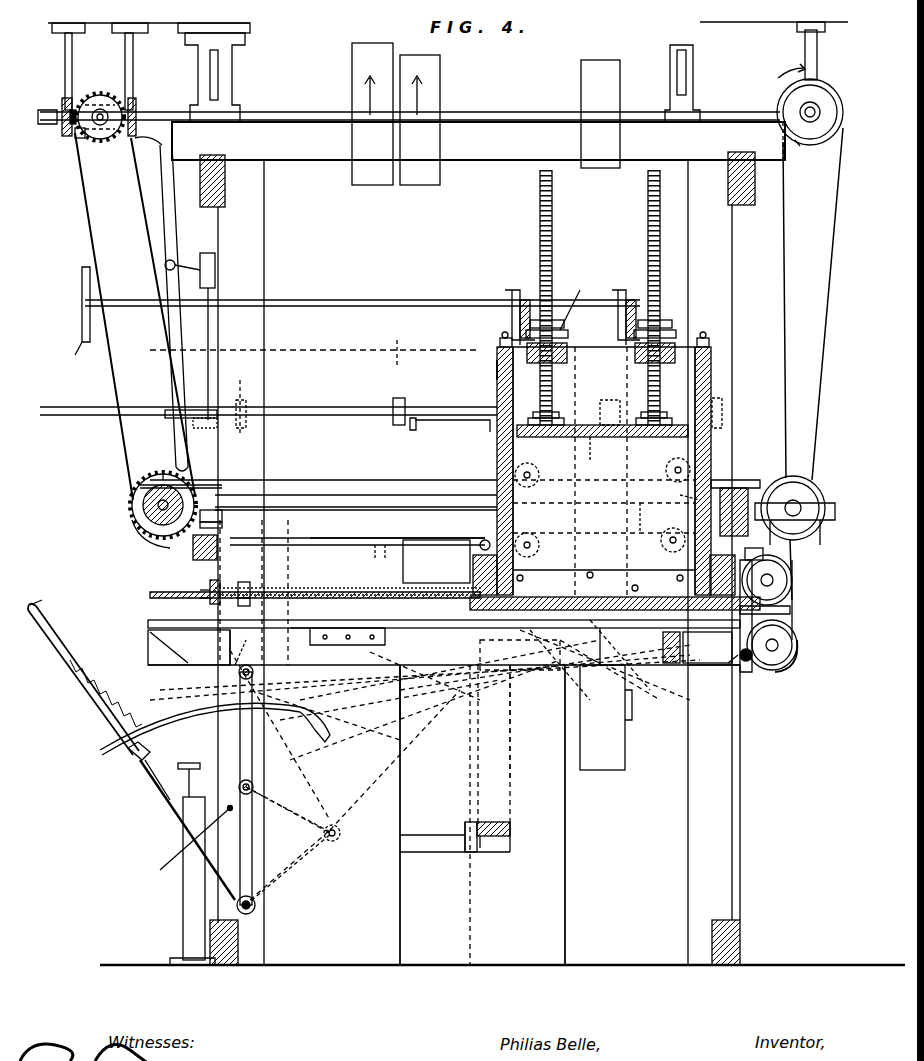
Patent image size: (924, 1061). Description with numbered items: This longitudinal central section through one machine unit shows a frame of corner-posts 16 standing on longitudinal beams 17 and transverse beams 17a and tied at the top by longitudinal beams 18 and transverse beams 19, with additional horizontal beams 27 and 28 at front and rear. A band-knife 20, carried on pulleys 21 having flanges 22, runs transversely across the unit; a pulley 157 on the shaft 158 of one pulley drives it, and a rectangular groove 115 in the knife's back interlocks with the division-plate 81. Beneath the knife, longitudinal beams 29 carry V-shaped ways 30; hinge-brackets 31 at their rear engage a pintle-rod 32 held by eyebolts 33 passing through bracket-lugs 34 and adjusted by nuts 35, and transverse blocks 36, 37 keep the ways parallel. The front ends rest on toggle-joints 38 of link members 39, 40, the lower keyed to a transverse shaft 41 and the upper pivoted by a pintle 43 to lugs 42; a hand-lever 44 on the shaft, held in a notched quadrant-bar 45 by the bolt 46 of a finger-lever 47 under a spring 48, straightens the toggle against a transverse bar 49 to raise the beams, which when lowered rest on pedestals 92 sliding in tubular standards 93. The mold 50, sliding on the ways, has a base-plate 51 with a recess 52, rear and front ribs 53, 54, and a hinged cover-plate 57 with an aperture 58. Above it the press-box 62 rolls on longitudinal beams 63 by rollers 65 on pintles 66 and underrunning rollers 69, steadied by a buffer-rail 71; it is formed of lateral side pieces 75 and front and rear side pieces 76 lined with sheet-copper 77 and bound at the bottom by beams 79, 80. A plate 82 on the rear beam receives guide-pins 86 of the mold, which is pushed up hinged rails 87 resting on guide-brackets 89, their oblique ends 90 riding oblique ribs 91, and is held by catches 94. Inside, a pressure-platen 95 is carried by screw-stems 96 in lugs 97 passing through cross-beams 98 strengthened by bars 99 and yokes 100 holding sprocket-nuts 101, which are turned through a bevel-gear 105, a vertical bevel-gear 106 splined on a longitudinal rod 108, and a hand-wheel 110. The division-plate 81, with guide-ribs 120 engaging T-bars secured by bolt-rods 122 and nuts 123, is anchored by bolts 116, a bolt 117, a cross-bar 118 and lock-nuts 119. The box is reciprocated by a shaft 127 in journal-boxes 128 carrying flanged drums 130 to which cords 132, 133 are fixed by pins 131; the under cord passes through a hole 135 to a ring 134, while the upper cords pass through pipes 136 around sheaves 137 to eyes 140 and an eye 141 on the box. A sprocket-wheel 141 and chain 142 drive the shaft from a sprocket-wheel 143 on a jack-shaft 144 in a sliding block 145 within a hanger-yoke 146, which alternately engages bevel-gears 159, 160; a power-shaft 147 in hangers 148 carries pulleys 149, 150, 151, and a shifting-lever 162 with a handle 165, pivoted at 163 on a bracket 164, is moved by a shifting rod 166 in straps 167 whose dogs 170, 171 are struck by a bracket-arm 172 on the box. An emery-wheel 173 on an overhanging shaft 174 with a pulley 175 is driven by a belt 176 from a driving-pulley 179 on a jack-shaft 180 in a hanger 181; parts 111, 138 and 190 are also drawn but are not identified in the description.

The corner-posts 16 is at (264, 243).
The horizontal longitudinal beams 17 is at (425, 965).
The transverse beams 17a is at (725, 985).
The longitudinal beams 18 is at (497, 160).
The transverse beams 19 is at (225, 195).
The band-knife 20 is at (495, 836).
The pulleys 21 is at (500, 800).
The flange 22 is at (470, 852).
The horizontal beam 27 is at (193, 558).
The horizontal beam 28 is at (748, 490).
The longitudinal beams 29 is at (400, 740).
The V-shaped ways 30 is at (165, 620).
The hinge-brackets 31 is at (795, 635).
The pintle-rod 32 is at (748, 662).
The eyebolts 33 is at (770, 615).
The bracket-lugs 34 is at (795, 600).
The nuts 35 is at (790, 575).
The transverse block 36 is at (672, 665).
The transverse block 37 is at (430, 690).
The toggle-joints 38 is at (340, 840).
The link member 39 is at (300, 838).
The link member 40 is at (240, 695).
The transverse shaft 41 is at (237, 905).
The lugs 42 is at (240, 672).
The pintle 43 is at (253, 672).
The hand-lever 44 is at (165, 800).
The notched quadrant-bar 45 is at (135, 765).
The bolt 46 is at (120, 745).
The finger-lever 47 is at (50, 620).
The spring 48 is at (95, 700).
The transverse bar 49 is at (179, 841).
The mold 50 is at (604, 575).
The base-plate 51 is at (624, 646).
The rectangular recess 52 is at (648, 560).
The rib 53 is at (707, 646).
The rib 54 is at (470, 603).
The cover-plate 57 is at (555, 575).
The central rectangular aperture 58 is at (590, 572).
The press-box 62 is at (540, 430).
The longitudinal beams 63 is at (370, 507).
The rollers 65 is at (497, 455).
The pintles 66 is at (602, 463).
The underrunning rollers 69 is at (600, 533).
The buffer-rail 71 is at (390, 495).
The lateral side pieces 75 is at (497, 385).
The front and rear side pieces 76 is at (497, 470).
The lining of sheet-copper 77 is at (497, 400).
The beam 79 is at (640, 518).
The beam 80 is at (473, 560).
The division-plate 81 is at (348, 545).
The plate 82 is at (763, 552).
The guide-pins 86 is at (735, 660).
The steel bars 87 is at (590, 635).
The longitudinal guide-brackets 89 is at (325, 676).
The oblique ends 90 is at (170, 772).
The oblique ribs 91 is at (165, 648).
The pedestals 92 is at (147, 782).
The tubular standards 93 is at (183, 893).
The catches 94 is at (312, 745).
The pressure-platen 95 is at (627, 437).
The screw-stems 96 is at (540, 230).
The lugs 97 is at (540, 412).
The cross-beams 98 is at (600, 425).
The steel strengthening-bars 99 is at (567, 340).
The steel yoke 100 is at (564, 322).
The sprocket-nut 101 is at (526, 334).
The bevel-gear 105 is at (584, 292).
The vertical bevel-gear 106 is at (525, 300).
The longitudinal rod 108 is at (390, 300).
The hand-wheel 110 is at (80, 350).
The bracket 111 is at (505, 300).
The rectangular groove 115 is at (482, 848).
The bolts 116 is at (244, 582).
The bolt 117 is at (245, 606).
The cross-bar 118 is at (205, 585).
The lock-nuts 119 is at (200, 600).
The guide-ribs 120 is at (377, 560).
The bolt-rods 122 is at (497, 335).
The nuts 123 is at (500, 342).
The shaft 127 is at (145, 512).
The journal-boxes 128 is at (222, 512).
The flanged drums 130 is at (135, 490).
The pins 131 is at (163, 460).
The under rope 132 is at (360, 532).
The upper cords 133 is at (210, 485).
The ring 134 is at (356, 522).
The hole 135 is at (222, 525).
The pipes 136 is at (340, 480).
The sheaves 137 is at (815, 490).
The shaft 138 is at (801, 508).
The eyes 140 is at (740, 462).
The sprocket-wheel 141 is at (140, 540).
The chain 142 is at (85, 230).
The sprocket-wheel 143 is at (100, 140).
The jack-shaft 144 is at (75, 138).
The sliding block 145 is at (70, 124).
The hanger-yoke 146 is at (133, 60).
The power-shaft 147 is at (490, 112).
The hangers 148 is at (232, 75).
The pulley 149 is at (370, 185).
The pulley 150 is at (420, 185).
The pulley 151 is at (581, 90).
The pulley 157 is at (600, 770).
The shaft 158 is at (630, 720).
The bevel-gear 159 is at (62, 100).
The bevel-gear 160 is at (136, 100).
The shifting-lever 162 is at (172, 352).
The pivot 163 is at (200, 260).
The bracket 164 is at (160, 303).
The handle 165 is at (200, 460).
The shifting rod 166 is at (345, 407).
The straps 167 is at (752, 410).
The collar 170 is at (403, 392).
The collar 171 is at (623, 403).
The bracket-arm 172 is at (600, 455).
The emery-wheel 173 is at (555, 672).
The overhanging shaft 174 is at (617, 655).
The pulley 175 is at (515, 720).
The belt 176 is at (825, 330).
The driving-pulley 179 is at (808, 146).
The jack-shaft 180 is at (800, 105).
The hanger 181 is at (805, 45).
The bar 190 is at (440, 422).